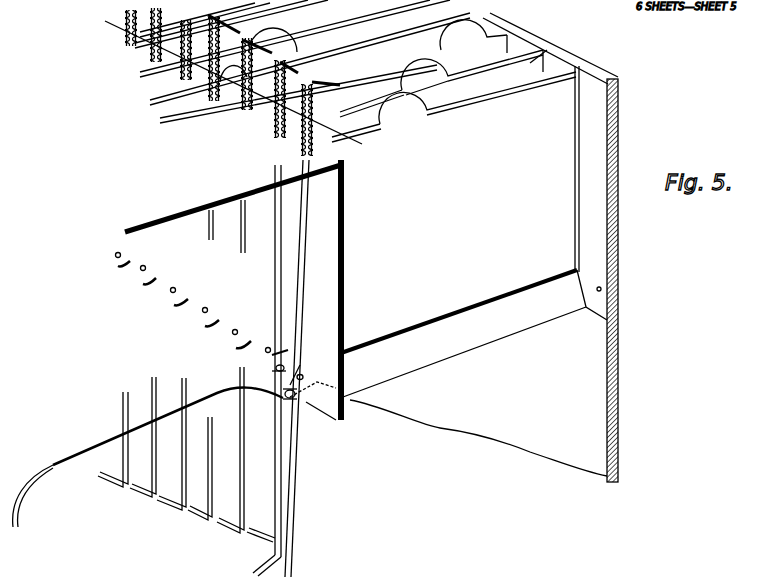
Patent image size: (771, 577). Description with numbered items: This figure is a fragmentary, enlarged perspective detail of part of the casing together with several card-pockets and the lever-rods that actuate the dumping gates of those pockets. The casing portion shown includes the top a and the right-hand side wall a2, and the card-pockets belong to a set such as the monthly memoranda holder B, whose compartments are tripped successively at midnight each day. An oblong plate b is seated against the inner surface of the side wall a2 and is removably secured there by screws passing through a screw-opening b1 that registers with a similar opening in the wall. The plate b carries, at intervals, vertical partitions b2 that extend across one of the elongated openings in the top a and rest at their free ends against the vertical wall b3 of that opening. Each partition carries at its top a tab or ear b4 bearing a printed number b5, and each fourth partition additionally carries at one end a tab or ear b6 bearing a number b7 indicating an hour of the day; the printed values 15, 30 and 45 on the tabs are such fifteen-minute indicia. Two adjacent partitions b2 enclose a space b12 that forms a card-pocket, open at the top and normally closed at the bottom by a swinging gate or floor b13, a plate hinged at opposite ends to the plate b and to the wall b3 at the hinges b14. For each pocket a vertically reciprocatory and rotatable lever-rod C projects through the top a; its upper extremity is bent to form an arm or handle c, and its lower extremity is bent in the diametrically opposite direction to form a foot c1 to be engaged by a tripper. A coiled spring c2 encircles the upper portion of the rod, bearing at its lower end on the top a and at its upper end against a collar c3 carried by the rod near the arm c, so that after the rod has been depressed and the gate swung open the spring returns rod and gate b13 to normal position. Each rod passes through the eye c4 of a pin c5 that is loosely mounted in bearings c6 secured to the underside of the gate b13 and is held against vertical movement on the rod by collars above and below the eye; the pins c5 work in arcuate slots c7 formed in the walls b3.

The top a is at (177, 342).
The right-hand side wall a2 is at (619, 412).
The monthly memoranda holder B is at (459, 290).
The plate b is at (584, 169).
The screw-opening b1 is at (604, 289).
The vertical partition b2 is at (533, 60).
The vertical wall b3 is at (344, 318).
The tab or ear b4 is at (472, 111).
The printed number b5 is at (420, 110).
The tab or ear b6 is at (222, 78).
The number b7 is at (234, 72).
The space for cards b12 is at (555, 62).
The swinging gate or floor b13 is at (518, 333).
The hinge b14 is at (575, 270).
The arm or handle c is at (340, 88).
The foot c1 is at (137, 500).
The coiled spring c2 is at (180, 78).
The collar c3 is at (275, 48).
The eye c4 is at (292, 404).
The pin c5 is at (310, 375).
The bearings c6 is at (290, 398).
The arcuate slot c7 is at (205, 325).
The dimension 15 is at (336, 71).
The dimension 30 is at (426, 74).
The dimension 45 is at (456, 38).